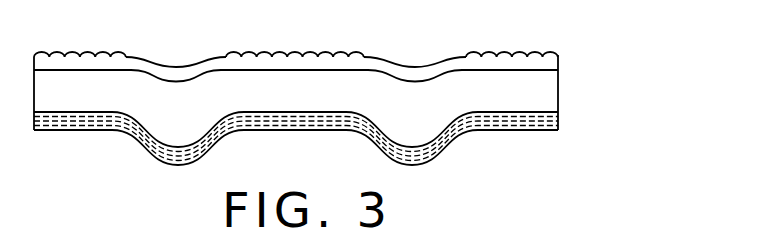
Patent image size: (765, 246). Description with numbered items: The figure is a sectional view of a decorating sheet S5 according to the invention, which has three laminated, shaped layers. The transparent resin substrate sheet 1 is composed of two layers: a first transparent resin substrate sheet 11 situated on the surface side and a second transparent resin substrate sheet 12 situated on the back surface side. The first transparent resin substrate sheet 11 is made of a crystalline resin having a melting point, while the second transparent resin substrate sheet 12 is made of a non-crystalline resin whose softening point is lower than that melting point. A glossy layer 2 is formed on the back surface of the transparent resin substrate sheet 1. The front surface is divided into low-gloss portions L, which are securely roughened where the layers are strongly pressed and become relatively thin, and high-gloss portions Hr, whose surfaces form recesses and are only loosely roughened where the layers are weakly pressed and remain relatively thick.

The transparent resin substrate sheet 1 is at (357, 70).
The first transparent resin substrate sheet 11 is at (335, 47).
The second transparent resin substrate sheet 12 is at (637, 52).
The glossy layer 2 is at (558, 131).
The high-gloss portion Hr is at (413, 65).
The low-gloss portion L is at (520, 53).
The decorating sheet S5 is at (573, 53).